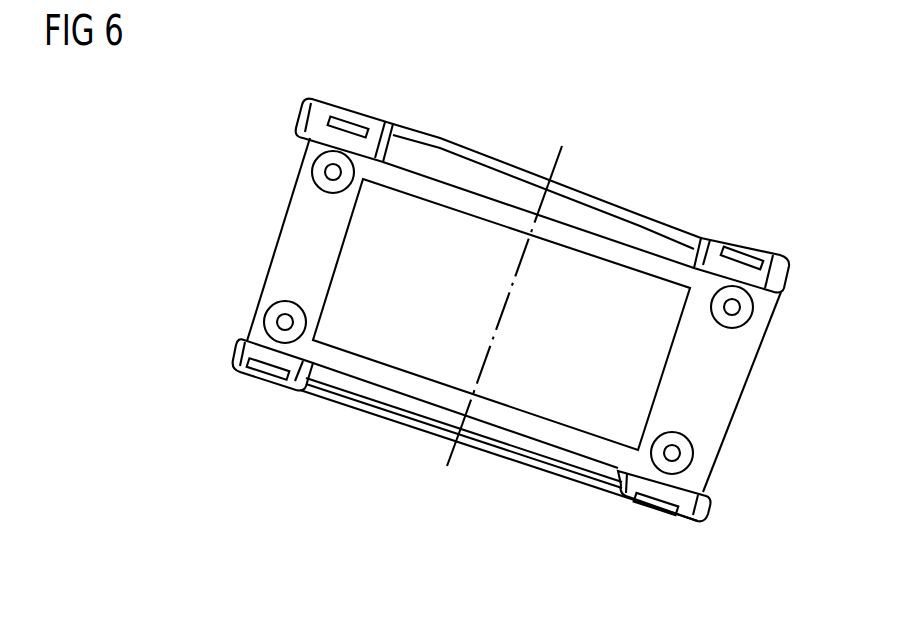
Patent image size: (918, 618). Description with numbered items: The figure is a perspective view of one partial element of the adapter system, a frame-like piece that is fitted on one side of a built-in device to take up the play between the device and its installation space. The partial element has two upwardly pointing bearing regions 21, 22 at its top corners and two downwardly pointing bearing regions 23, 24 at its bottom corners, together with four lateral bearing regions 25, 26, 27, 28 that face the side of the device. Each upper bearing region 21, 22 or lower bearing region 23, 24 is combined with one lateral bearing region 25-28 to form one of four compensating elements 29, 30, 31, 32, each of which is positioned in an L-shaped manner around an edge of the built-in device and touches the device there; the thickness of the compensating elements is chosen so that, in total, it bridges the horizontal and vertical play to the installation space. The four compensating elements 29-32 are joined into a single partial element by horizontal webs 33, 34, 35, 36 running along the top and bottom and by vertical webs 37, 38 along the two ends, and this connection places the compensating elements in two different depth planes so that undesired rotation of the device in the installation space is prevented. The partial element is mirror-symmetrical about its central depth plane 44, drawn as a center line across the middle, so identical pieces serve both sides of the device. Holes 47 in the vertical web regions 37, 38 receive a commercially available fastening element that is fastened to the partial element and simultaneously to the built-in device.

The upper bearing region 21 is at (373, 108).
The upper bearing region 22 is at (731, 240).
The lower bearing region 23 is at (633, 516).
The lower bearing region 24 is at (261, 384).
The lateral bearing region 25 is at (325, 133).
The lateral bearing region 26 is at (757, 284).
The lateral bearing region 27 is at (687, 500).
The lateral bearing region 28 is at (253, 350).
The compensating element 29 is at (324, 112).
The compensating element 30 is at (769, 262).
The compensating element 31 is at (685, 520).
The compensating element 32 is at (226, 367).
The horizontal web 33 is at (378, 420).
The horizontal web 34 is at (503, 414).
The horizontal web 35 is at (436, 194).
The horizontal web 36 is at (508, 162).
The vertical web 37 is at (298, 258).
The vertical web 38 is at (710, 392).
The central depth plane 44 is at (563, 160).
The hole 47 is at (333, 172).